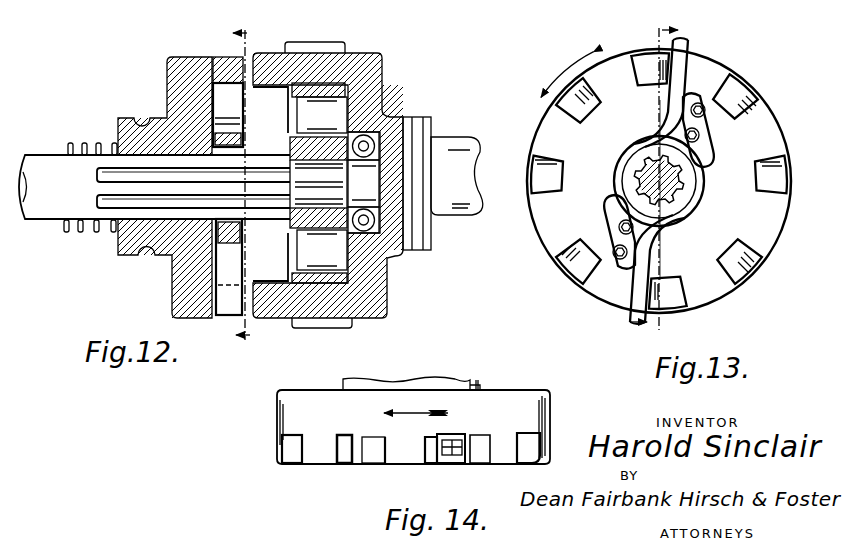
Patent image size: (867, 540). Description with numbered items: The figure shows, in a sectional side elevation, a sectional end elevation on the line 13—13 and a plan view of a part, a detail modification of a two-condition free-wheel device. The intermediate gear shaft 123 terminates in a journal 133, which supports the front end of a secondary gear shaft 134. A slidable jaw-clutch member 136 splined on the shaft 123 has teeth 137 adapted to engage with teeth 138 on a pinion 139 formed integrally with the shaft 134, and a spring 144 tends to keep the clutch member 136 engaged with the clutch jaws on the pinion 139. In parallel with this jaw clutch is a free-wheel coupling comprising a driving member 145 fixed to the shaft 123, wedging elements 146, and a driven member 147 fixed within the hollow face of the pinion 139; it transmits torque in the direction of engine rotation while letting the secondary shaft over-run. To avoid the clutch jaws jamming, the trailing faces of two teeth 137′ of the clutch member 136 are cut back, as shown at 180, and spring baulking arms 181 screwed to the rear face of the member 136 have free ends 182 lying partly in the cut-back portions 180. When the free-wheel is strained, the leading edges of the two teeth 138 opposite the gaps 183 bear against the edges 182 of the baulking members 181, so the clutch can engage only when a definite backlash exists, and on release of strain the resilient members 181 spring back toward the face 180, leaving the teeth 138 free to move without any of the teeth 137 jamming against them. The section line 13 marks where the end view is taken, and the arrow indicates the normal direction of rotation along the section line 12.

In FIG. 13, the section line 12- 12 is at (646, 172).
In FIG. 12, the section line 13 is at (254, 184).
In FIG. 12, the intermediate gear shaft 123 is at (27, 170).
In FIG. 12, the journal 133 is at (405, 185).
In FIG. 12, the secondary gear shaft 134 is at (460, 150).
In FIG. 12, the slidable jaw-clutch member 136 is at (180, 58).
In FIG. 13, the slidable jaw-clutch member 136 is at (585, 205).
In FIG. 14, the slidable jaw-clutch member 136 is at (550, 416).
In FIG. 13, the teeth 137 is at (762, 100).
In FIG. 14, the teeth 137 is at (283, 466).
In FIG. 12, the teeth 137′ is at (232, 57).
In FIG. 13, the teeth 137′ is at (640, 52).
In FIG. 14, the teeth 137′ is at (405, 464).
In FIG. 12, the teeth 138 is at (300, 325).
In FIG. 12, the pinion 139 is at (372, 54).
In FIG. 12, the spring 144 is at (90, 146).
In FIG. 12, the driving member 145 is at (375, 130).
In FIG. 12, the wedging elements 146 is at (335, 112).
In FIG. 12, the driven member 147 is at (345, 90).
In FIG. 12, the cut-back portions 180 is at (220, 320).
In FIG. 13, the cut-back portions 180 is at (675, 52).
In FIG. 14, the cut-back portions 180 is at (432, 458).
In FIG. 12, the spring baulking arms 181 is at (227, 80).
In FIG. 13, the spring baulking arms 181 is at (668, 108).
In FIG. 14, the spring baulking arms 181 is at (340, 465).
In FIG. 13, the free ends 182 is at (686, 62).
In FIG. 14, the free ends 182 is at (455, 458).
In FIG. 12, the gaps 183 is at (289, 140).
In FIG. 13, the gaps 183 is at (722, 68).
In FIG. 14, the gaps 183 is at (350, 437).